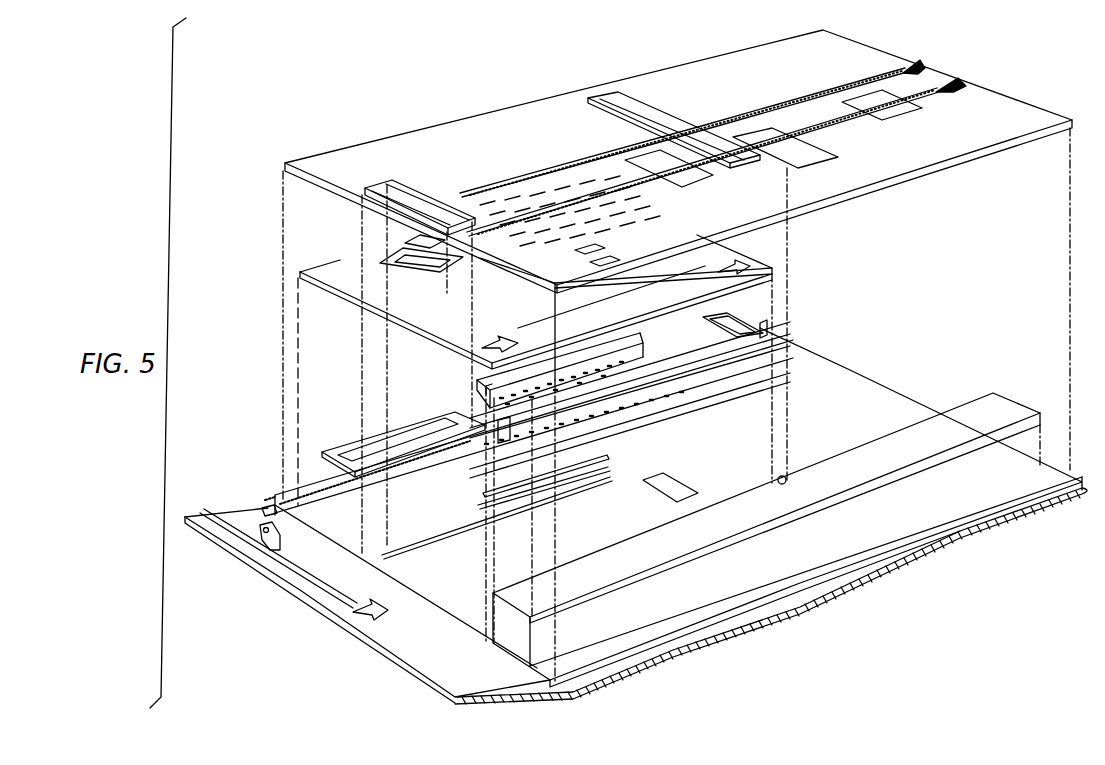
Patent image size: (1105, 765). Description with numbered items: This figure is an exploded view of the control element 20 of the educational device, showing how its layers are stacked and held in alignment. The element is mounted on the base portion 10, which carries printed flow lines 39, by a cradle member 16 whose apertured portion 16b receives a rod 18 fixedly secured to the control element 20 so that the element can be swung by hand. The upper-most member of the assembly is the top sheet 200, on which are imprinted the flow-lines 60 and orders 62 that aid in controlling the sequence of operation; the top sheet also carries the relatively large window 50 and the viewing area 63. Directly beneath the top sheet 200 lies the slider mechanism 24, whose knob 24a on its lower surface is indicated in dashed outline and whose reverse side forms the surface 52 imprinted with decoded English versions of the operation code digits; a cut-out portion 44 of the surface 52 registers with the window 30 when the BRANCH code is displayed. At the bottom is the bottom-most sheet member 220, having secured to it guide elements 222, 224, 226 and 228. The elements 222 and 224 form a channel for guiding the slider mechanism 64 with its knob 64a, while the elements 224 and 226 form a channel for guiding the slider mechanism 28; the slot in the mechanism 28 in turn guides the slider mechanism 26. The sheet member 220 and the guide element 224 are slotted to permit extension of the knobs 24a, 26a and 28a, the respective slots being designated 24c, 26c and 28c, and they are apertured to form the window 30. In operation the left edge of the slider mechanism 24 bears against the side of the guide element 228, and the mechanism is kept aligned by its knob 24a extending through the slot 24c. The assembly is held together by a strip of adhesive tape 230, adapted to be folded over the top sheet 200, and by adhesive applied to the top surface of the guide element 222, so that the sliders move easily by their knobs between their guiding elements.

The base portion 10 is at (963, 528).
The cradle member 16 is at (285, 538).
The apertured portion 16b is at (262, 533).
The rod 18 is at (262, 509).
The control element 20 is at (918, 228).
The slider mechanism 24 is at (333, 289).
The knob 24a is at (378, 307).
The slot 24c is at (586, 487).
The slider mechanism 26 is at (640, 334).
The knob 26a is at (477, 386).
The slot 26c is at (595, 456).
The slider mechanism 28 is at (733, 320).
The knob 28a is at (505, 430).
The slot 28c is at (612, 458).
The cut-out area (window) 30 is at (681, 483).
The printed flow lines 39 is at (324, 597).
The cut-out portion 44 is at (612, 278).
The window 50 is at (655, 112).
The surface 52 is at (722, 254).
The flow-lines 60 is at (571, 165).
The orders 62 is at (712, 178).
The viewing area (window) 63 is at (405, 185).
The slider mechanism 64 is at (967, 411).
The knob 64a is at (787, 480).
The top sheet 200 is at (1022, 112).
The bottom-most sheet member 220 is at (512, 650).
The guide element 222 is at (695, 620).
The guide element 224 is at (440, 603).
The guide element 226 is at (327, 522).
The guide element 228 is at (308, 500).
The strip of adhesive tape 230 is at (290, 494).